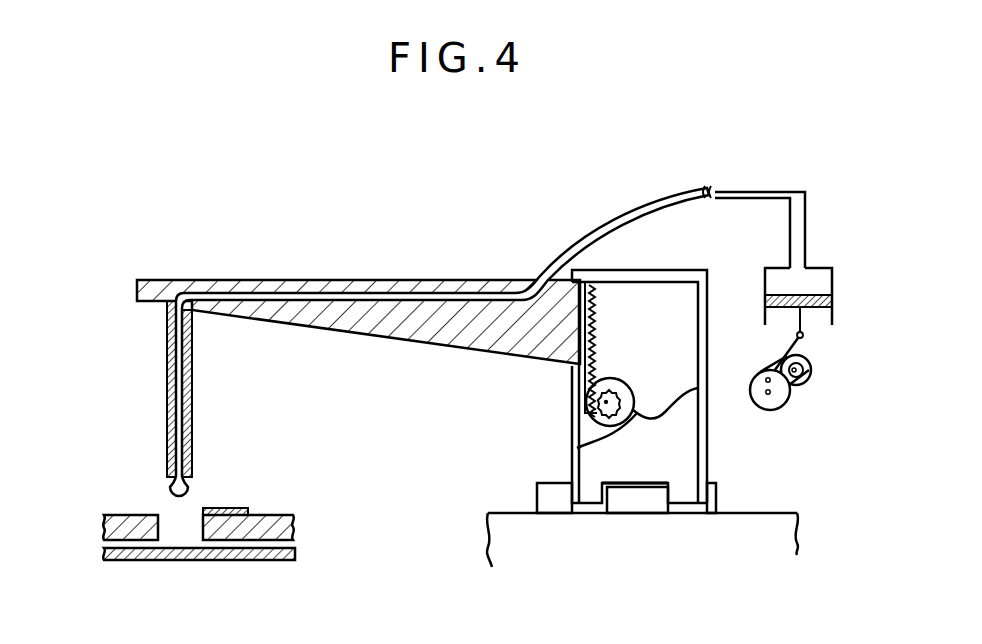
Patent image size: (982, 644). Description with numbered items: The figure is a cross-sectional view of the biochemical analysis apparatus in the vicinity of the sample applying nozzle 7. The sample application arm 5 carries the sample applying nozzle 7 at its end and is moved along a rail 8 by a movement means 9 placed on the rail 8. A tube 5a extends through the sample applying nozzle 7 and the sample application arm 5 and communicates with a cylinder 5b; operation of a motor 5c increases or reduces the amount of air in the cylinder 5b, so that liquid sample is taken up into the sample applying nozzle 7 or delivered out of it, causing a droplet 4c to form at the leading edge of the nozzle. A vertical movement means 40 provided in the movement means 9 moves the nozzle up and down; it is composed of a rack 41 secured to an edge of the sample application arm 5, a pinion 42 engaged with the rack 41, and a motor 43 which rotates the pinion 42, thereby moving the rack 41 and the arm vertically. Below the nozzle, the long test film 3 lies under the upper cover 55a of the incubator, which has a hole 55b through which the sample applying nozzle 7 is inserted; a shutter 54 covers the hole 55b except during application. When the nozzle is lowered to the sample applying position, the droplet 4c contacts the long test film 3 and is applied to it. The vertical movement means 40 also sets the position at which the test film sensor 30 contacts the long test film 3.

The sample application arm 5 is at (316, 279).
The tube 5a is at (430, 292).
The cylinder 5b is at (832, 286).
The motor 5c is at (810, 378).
The sample applying nozzle 7 is at (192, 413).
The test film sensor 30 is at (173, 484).
The upper cover 55a is at (117, 515).
The hole 55b is at (204, 510).
The shutter 54 is at (235, 510).
The droplet 4c is at (178, 505).
The long test film 3 is at (255, 558).
The vertical movement means 40 is at (627, 328).
The rack 41 is at (596, 366).
The pinion 42 is at (590, 427).
The motor 43 is at (650, 420).
The movement means 9 is at (707, 428).
The rail 8 is at (641, 500).